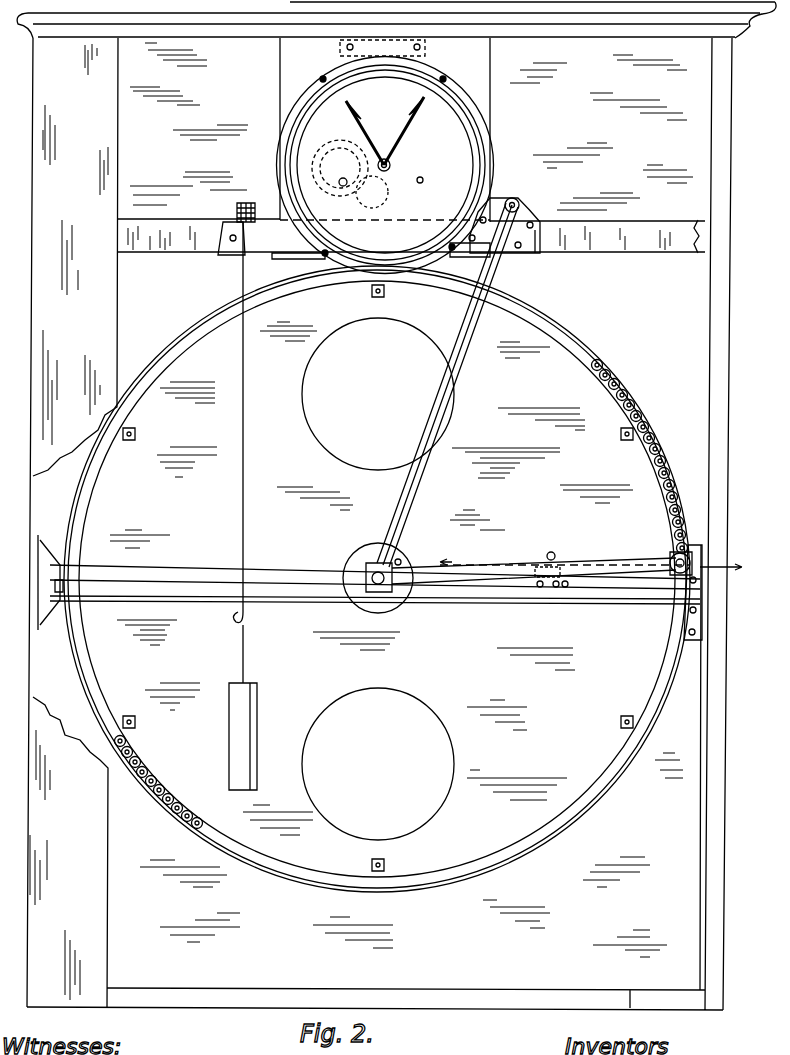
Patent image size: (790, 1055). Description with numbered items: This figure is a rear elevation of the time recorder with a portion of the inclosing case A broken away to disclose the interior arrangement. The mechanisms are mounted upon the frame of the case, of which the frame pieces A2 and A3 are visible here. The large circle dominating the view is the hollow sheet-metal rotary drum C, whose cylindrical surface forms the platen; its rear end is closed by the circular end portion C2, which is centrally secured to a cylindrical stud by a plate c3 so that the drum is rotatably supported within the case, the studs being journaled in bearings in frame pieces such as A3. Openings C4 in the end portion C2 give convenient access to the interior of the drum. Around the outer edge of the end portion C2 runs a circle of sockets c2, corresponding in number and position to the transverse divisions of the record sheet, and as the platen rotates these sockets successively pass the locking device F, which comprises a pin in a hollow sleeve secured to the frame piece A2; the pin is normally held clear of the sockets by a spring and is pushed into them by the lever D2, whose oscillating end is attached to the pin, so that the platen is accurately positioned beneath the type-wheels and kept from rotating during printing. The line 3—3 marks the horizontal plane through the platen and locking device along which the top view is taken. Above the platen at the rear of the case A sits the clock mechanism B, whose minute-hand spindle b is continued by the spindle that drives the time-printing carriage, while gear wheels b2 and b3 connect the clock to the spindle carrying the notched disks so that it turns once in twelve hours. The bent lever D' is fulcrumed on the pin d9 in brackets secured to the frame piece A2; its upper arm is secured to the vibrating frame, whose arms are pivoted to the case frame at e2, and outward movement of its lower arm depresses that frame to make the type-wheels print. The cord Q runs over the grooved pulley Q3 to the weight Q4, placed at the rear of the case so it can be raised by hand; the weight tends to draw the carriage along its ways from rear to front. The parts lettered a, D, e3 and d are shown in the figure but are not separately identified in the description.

The case A is at (396, 506).
The frame piece A2 is at (641, 249).
The frame piece A3 is at (184, 575).
The clock mechanism B is at (383, 156).
The minute-hand spindle b is at (398, 170).
The gear wheel b2 is at (383, 196).
The gear wheel b3 is at (292, 160).
The cord Q is at (245, 420).
The grooved pulley Q3 is at (236, 210).
The weight Q4 is at (257, 700).
The clamp plate a is at (222, 252).
The hollow rotary drum C is at (590, 345).
The sockets c2 is at (160, 786).
The circular end portion C2 is at (396, 639).
The openings C4 is at (378, 579).
The hub D is at (359, 574).
The bent lever D' is at (447, 385).
The lever D2 is at (622, 560).
The locking device F is at (675, 558).
The pivot e2 is at (530, 212).
The pivot pin e3 is at (495, 201).
The pin d9 is at (536, 253).
The plate c3 is at (403, 560).
The clip d is at (566, 588).
The section line 3— 3 is at (589, 564).